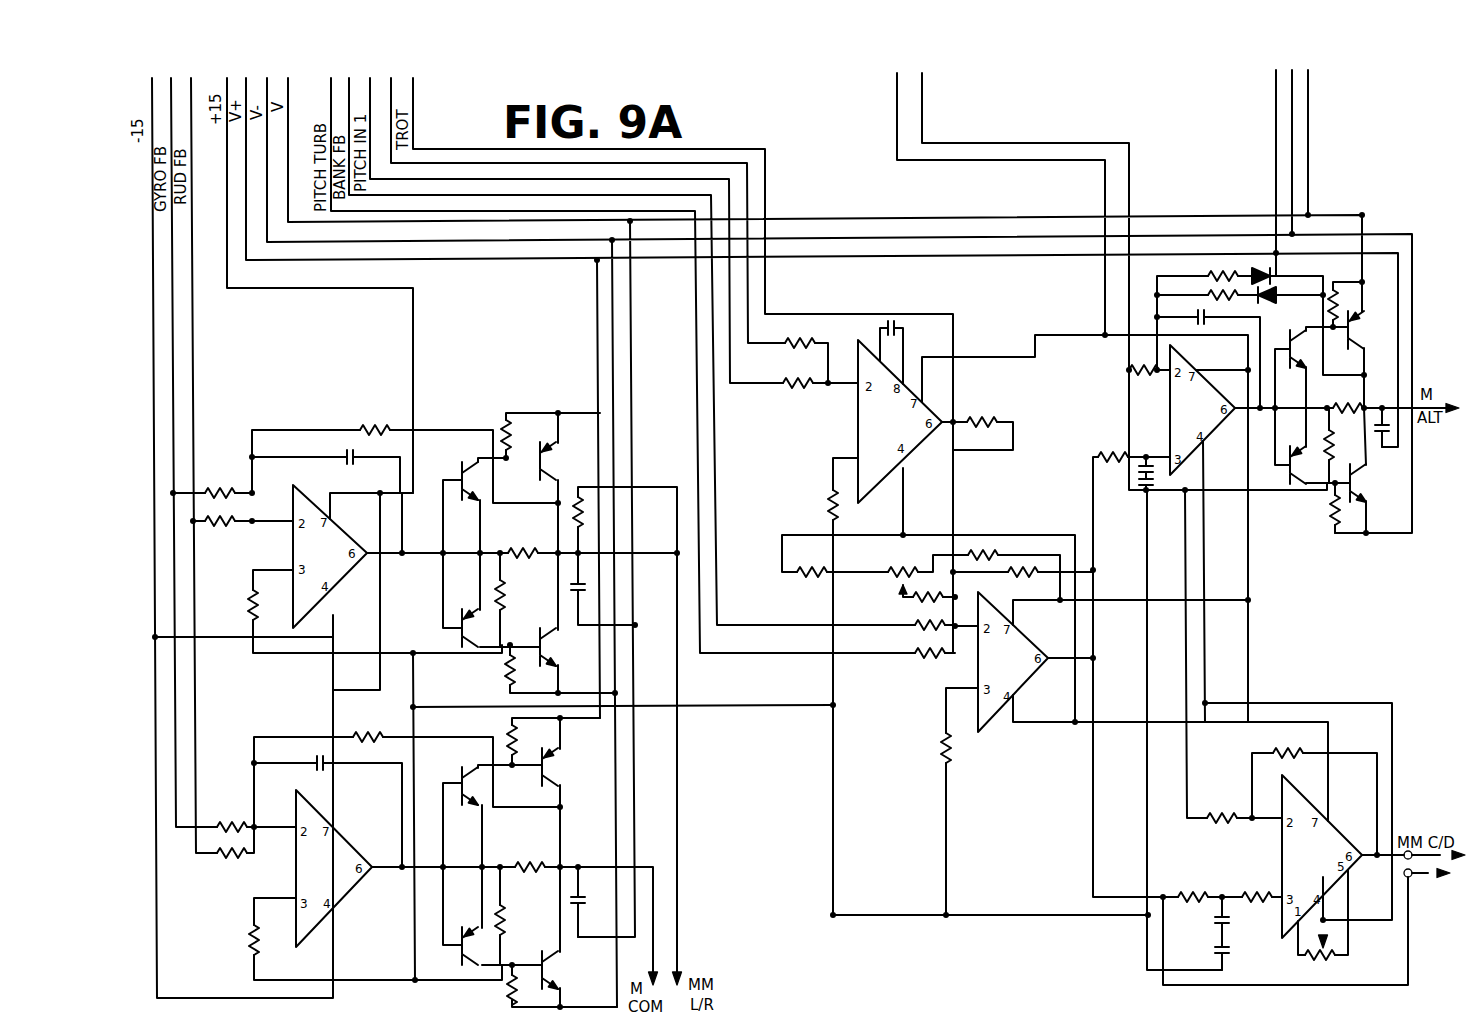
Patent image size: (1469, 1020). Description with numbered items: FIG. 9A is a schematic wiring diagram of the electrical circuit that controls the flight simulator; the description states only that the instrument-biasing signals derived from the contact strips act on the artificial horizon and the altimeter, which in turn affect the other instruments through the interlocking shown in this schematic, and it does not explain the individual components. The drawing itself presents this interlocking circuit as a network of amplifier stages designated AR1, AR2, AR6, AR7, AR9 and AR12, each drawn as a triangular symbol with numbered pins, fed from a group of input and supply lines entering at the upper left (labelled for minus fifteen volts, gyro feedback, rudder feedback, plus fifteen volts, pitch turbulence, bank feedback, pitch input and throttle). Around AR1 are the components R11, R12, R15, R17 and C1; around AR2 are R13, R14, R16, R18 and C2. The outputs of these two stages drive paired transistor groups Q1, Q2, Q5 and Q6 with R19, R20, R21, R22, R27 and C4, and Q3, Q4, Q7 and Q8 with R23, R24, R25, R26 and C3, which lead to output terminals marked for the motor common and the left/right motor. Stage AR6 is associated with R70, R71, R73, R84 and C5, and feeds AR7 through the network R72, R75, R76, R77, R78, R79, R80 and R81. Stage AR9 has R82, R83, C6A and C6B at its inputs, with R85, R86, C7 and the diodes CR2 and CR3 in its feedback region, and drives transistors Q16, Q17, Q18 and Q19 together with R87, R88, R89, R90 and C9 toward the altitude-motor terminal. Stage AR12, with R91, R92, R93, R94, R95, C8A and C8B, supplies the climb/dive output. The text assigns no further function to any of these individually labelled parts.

The operational amplifier AR1 is at (330, 556).
The operational amplifier AR2 is at (334, 868).
The operational amplifier AR6 is at (900, 421).
The operational amplifier AR7 is at (1013, 662).
The operational amplifier AR9 is at (1202, 410).
The operational amplifier AR12 is at (1322, 856).
The resistor R11 is at (222, 484).
The resistor R12 is at (225, 533).
The resistor R13 is at (227, 818).
The resistor R14 is at (228, 865).
The resistor R15 is at (233, 605).
The resistor R16 is at (233, 940).
The resistor R17 is at (373, 420).
The resistor R18 is at (364, 726).
The resistor R19 is at (522, 596).
The resistor R20 is at (486, 426).
The resistor R21 is at (514, 543).
The resistor R22 is at (486, 671).
The resistor R23 is at (489, 732).
The resistor R24 is at (527, 856).
The resistor R25 is at (521, 920).
The resistor R26 is at (484, 990).
The resistor R27 is at (540, 506).
The capacitor C1 is at (335, 451).
The capacitor C2 is at (311, 774).
The capacitor C3 is at (588, 913).
The capacitor C4 is at (555, 577).
The capacitor C5 is at (893, 313).
The capacitor C6A is at (1123, 491).
The capacitor C6B is at (1124, 510).
The capacitor C7 is at (1183, 315).
The capacitor C8A is at (1237, 916).
The capacitor C8B is at (1237, 954).
The capacitor C9 is at (1407, 439).
The transistor Q1 is at (474, 481).
The transistor Q2 is at (474, 628).
The transistor Q3 is at (474, 786).
The transistor Q4 is at (474, 946).
The transistor Q5 is at (556, 461).
The transistor Q6 is at (556, 647).
The transistor Q7 is at (557, 767).
The transistor Q8 is at (559, 970).
The transistor Q16 is at (1308, 349).
The transistor Q17 is at (1310, 465).
The transistor Q18 is at (1370, 330).
The transistor Q19 is at (1374, 483).
The resistor R70 is at (806, 334).
The resistor R71 is at (790, 371).
The resistor R72 is at (802, 586).
The resistor R73 is at (803, 501).
The potentiometer R75 is at (893, 561).
The resistor R76 is at (904, 603).
The resistor R77 is at (907, 632).
The resistor R78 is at (922, 664).
The resistor R79 is at (967, 751).
The resistor R80 is at (994, 536).
The resistor R81 is at (1023, 555).
The resistor R82 is at (1104, 446).
The resistor R83 is at (1119, 361).
The resistor R84 is at (996, 412).
The resistor R85 is at (1199, 269).
The resistor R86 is at (1199, 290).
The resistor R87 is at (1361, 302).
The resistor R88 is at (1346, 442).
The resistor R89 is at (1339, 395).
The resistor R90 is at (1311, 517).
The resistor R91 is at (1289, 743).
The resistor R92 is at (1221, 806).
The resistor R93 is at (1187, 885).
The resistor R94 is at (1250, 885).
The potentiometer R95 is at (1320, 966).
The diode CR2 is at (1285, 270).
The diode CR3 is at (1280, 302).